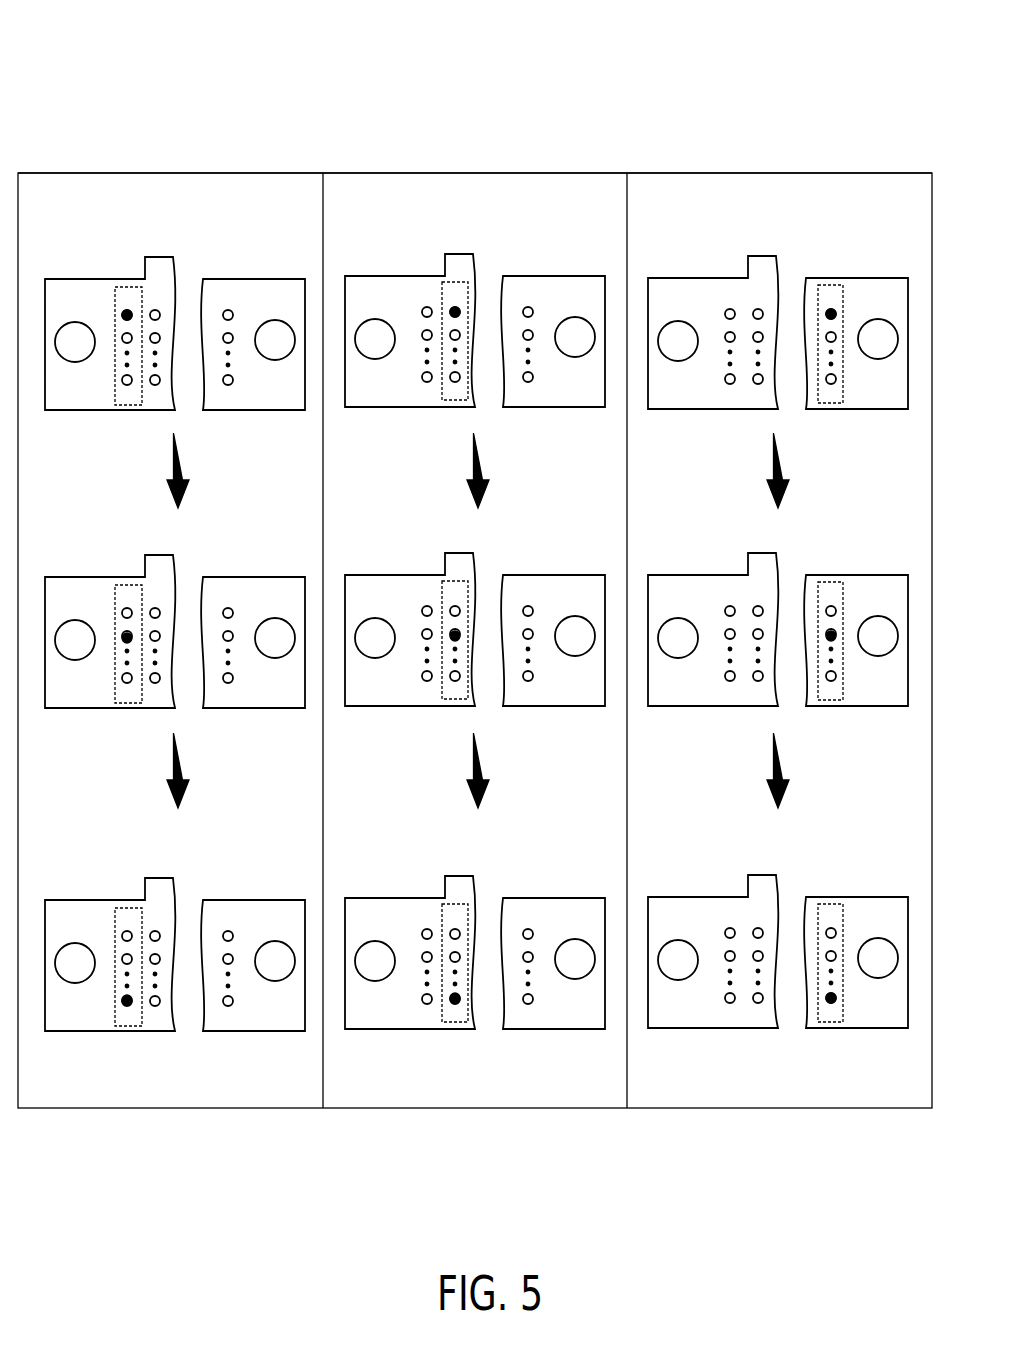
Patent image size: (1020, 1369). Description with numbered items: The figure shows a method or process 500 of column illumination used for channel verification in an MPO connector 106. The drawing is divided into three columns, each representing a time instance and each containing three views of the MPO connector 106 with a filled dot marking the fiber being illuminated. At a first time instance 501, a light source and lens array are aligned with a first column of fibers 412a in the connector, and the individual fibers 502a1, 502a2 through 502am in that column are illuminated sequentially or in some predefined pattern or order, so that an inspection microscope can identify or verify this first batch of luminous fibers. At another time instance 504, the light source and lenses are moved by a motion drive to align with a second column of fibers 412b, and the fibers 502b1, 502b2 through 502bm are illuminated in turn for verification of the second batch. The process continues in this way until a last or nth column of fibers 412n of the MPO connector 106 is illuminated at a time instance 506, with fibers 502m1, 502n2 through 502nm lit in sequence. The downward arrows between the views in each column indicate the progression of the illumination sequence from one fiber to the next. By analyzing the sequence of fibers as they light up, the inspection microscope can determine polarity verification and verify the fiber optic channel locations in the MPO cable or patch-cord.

The method or process 500 is at (137, 93).
The first time instance 501 is at (205, 173).
The another time instance 504 is at (480, 173).
The time instance 506 is at (800, 173).
The MPO connector 106 is at (72, 278).
The first column of fibers 412a is at (132, 285).
The second column of fibers 412b is at (459, 282).
The nth column of fibers 412n is at (832, 280).
The fiber 502a1 is at (126, 313).
The fiber 502a2 is at (126, 636).
The fiber 502am is at (127, 1003).
The fiber 502b1 is at (453, 310).
The fiber 502b2 is at (453, 634).
The fiber 502bm is at (453, 1000).
The fiber 502m1 is at (832, 312).
The fiber 502n2 is at (832, 634).
The fiber 502nm is at (833, 1000).